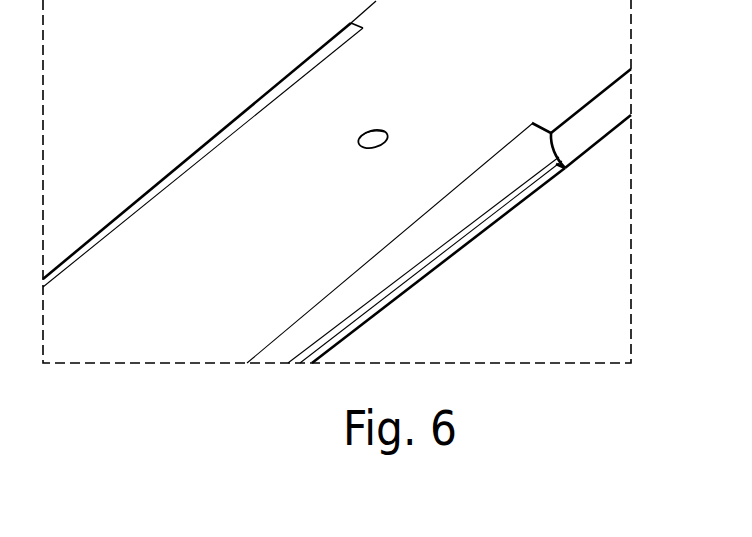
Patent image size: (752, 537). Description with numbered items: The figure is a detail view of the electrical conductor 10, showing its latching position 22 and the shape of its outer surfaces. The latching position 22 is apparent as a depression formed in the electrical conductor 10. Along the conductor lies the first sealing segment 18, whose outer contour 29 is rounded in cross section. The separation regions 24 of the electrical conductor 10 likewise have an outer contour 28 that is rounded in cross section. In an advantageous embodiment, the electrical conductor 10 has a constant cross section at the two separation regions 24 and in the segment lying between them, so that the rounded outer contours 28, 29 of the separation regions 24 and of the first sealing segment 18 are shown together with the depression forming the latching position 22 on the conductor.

The electrical conductor 10 is at (587, 63).
The first sealing segment 18 is at (436, 243).
The latching position 22 is at (372, 141).
The separation regions 24 is at (456, 260).
The outer contour 28 is at (496, 177).
The outer contour 29 is at (360, 284).